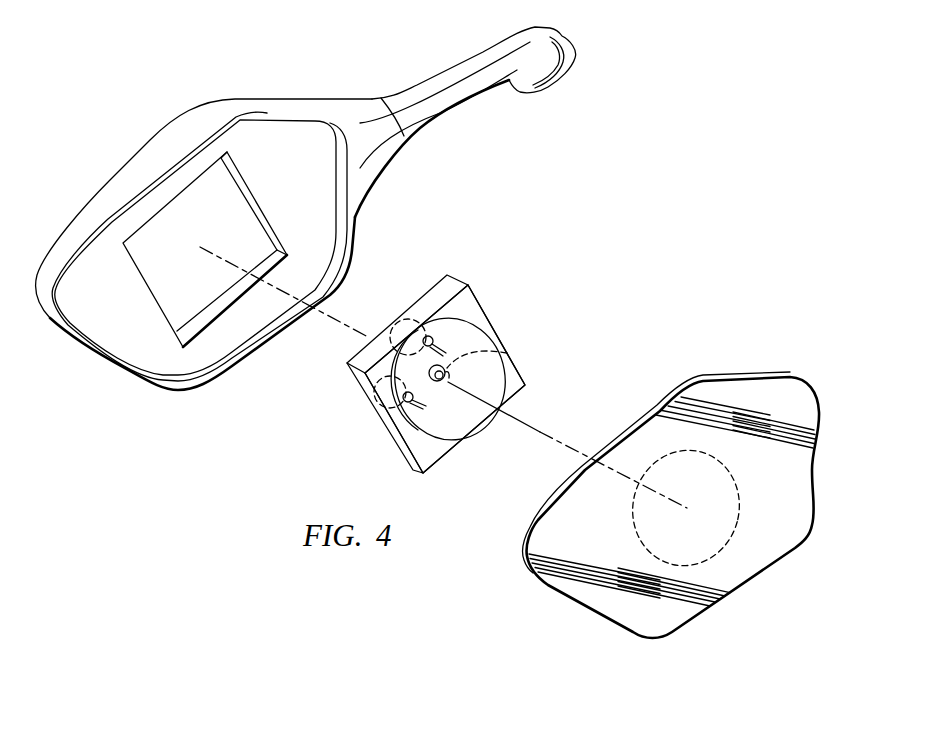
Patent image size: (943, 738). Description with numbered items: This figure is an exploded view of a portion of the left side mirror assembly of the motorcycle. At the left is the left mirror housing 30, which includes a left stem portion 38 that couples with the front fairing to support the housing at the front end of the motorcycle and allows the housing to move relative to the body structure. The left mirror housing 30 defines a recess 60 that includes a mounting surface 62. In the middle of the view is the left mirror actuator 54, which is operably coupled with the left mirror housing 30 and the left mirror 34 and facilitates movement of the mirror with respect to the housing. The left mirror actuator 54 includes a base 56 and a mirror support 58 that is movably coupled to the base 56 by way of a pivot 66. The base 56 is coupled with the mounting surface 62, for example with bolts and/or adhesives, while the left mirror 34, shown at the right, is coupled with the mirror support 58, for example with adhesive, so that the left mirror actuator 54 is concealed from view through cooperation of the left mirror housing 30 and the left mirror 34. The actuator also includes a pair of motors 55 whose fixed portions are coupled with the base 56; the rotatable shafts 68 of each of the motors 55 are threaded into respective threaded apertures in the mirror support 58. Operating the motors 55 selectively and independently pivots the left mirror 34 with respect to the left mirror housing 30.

The left mirror housing 30 is at (146, 136).
The left stem portion 38 is at (447, 78).
The recess 60 is at (240, 223).
The mounting surface 62 is at (150, 264).
The left mirror 34 is at (756, 568).
The left mirror actuator 54 is at (370, 433).
The motors 55 is at (393, 318).
The base 56 is at (466, 307).
The mirror support 58 is at (495, 380).
The pivot 66 is at (507, 353).
The rotatable shafts 68 is at (432, 343).